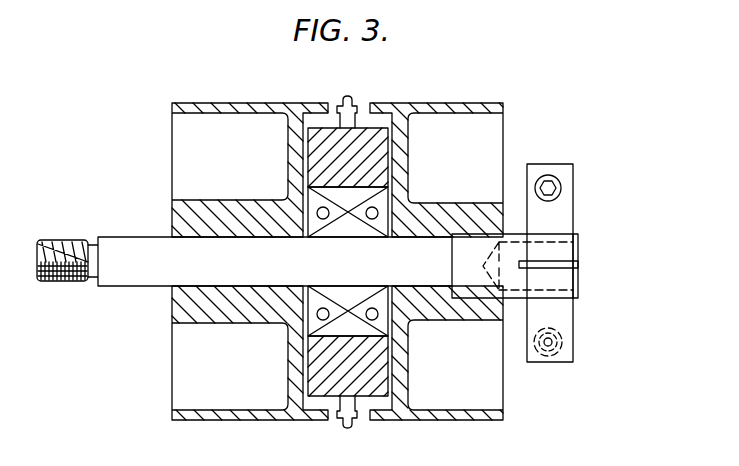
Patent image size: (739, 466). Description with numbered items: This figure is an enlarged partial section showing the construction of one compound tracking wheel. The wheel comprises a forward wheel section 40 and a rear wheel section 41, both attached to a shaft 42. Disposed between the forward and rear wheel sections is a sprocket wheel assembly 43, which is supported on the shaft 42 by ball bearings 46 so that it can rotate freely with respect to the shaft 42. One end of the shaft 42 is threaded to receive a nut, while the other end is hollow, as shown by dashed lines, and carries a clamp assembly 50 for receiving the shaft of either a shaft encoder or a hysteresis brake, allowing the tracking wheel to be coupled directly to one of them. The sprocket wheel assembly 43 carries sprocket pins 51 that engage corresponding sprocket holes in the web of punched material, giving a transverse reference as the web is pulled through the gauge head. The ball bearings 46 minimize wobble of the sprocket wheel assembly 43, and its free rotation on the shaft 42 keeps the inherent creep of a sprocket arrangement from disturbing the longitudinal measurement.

The forward wheel section 40 is at (253, 102).
The rear wheel section 41 is at (473, 103).
The shaft 42 is at (138, 285).
The sprocket wheel assembly 43 is at (360, 376).
The ball bearings 46 is at (340, 302).
The clamp assembly 50 is at (573, 325).
The sprocket pins 51 is at (340, 423).